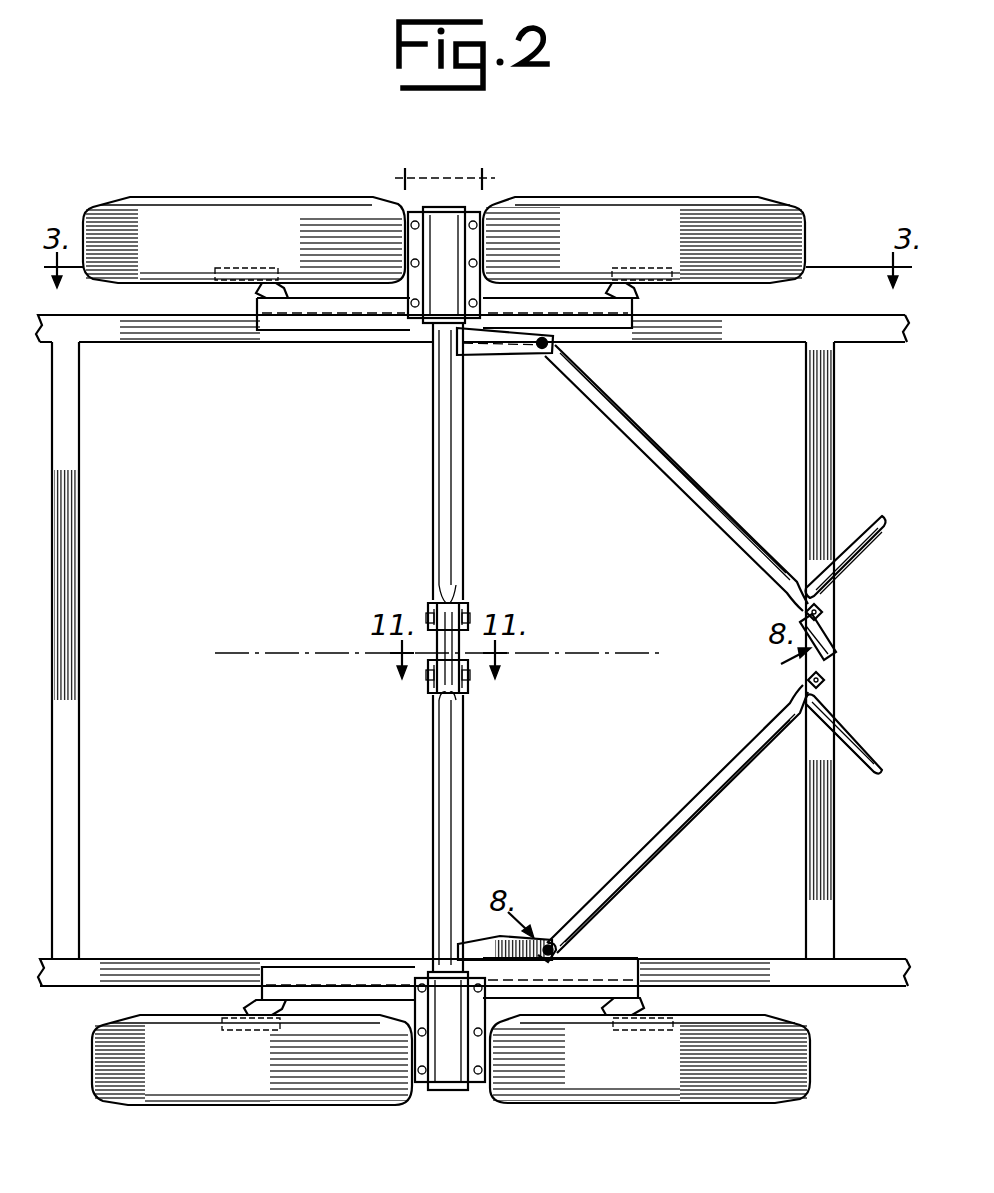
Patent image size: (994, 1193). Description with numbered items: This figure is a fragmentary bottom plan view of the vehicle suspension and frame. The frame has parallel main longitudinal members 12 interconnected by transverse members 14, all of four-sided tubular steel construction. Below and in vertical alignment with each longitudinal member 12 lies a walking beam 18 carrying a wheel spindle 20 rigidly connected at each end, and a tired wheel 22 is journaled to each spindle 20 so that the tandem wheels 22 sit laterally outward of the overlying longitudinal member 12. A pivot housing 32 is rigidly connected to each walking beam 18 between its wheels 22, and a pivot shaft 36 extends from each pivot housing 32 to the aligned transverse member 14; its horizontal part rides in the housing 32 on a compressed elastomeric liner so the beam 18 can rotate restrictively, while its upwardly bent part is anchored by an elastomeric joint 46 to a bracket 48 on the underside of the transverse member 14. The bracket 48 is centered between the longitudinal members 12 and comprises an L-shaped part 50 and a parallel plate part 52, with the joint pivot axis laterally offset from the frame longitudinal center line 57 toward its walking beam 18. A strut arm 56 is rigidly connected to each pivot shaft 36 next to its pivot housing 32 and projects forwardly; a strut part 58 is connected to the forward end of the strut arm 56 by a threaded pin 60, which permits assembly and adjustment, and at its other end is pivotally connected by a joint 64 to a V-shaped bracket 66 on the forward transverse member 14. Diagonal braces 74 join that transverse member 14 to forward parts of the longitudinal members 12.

The main longitudinal member 12 is at (153, 344).
The transverse member 14 is at (72, 446).
The walking beam 18 is at (313, 330).
The wheel spindle 20 is at (252, 292).
The tired wheel 22 is at (253, 198).
The pivot housing 32 is at (448, 225).
The pivot shaft 36 is at (440, 463).
The elastomeric joint 46 is at (466, 603).
The bracket 48 is at (428, 622).
The L-shaped part 50 is at (428, 670).
The parallel plate part 52 is at (468, 620).
The strut arm 56 is at (508, 350).
The frame longitudinal center line 57 is at (308, 660).
The strut part 58 is at (650, 454).
The threaded pin 60 is at (543, 350).
The joint 64 is at (825, 612).
The V-shaped bracket 66 is at (830, 640).
The diagonal brace 74 is at (860, 541).